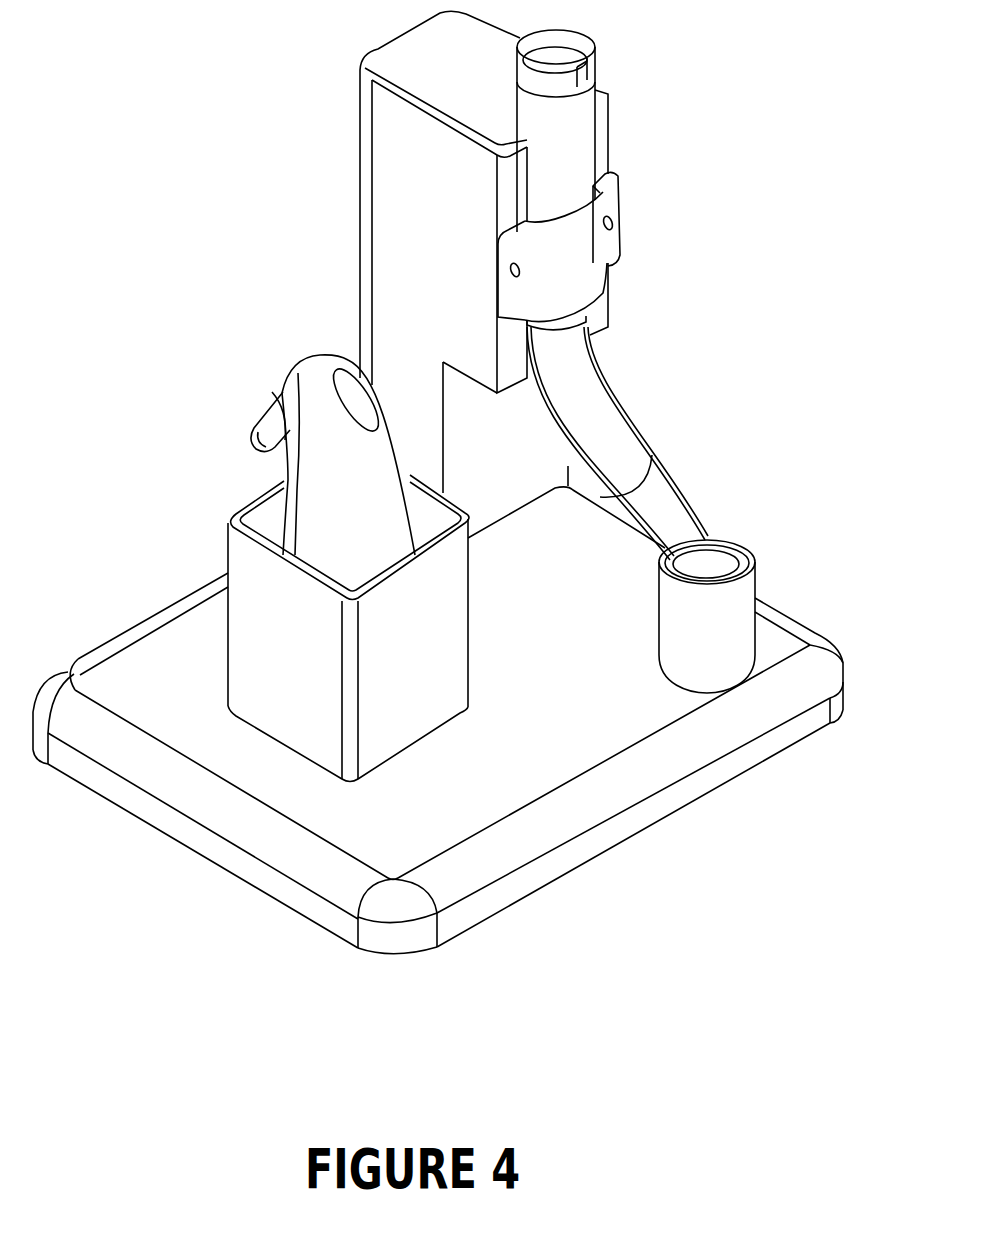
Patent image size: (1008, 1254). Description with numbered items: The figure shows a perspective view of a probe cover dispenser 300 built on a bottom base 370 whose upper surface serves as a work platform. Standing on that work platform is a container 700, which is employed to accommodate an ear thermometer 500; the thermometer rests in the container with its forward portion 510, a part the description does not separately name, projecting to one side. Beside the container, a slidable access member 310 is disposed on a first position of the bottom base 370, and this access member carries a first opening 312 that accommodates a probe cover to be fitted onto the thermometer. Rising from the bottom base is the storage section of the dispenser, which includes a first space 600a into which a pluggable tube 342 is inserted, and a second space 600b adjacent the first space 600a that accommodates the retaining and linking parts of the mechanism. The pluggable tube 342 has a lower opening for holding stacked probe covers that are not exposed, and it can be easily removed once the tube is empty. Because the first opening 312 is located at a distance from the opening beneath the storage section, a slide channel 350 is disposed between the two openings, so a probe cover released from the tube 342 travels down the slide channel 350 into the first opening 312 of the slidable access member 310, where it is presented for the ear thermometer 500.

The probe cover dispenser 300 is at (828, 1079).
The slidable access member 310 is at (778, 580).
The first opening 312 is at (708, 565).
The pluggable tube 342 is at (603, 68).
The slide channel 350 is at (627, 452).
The bottom base 370 is at (653, 813).
The ear thermometer 500 is at (318, 370).
The nozzle 510 is at (260, 437).
The first space 600a is at (616, 143).
The second space 600b is at (354, 166).
The container 700 is at (250, 567).